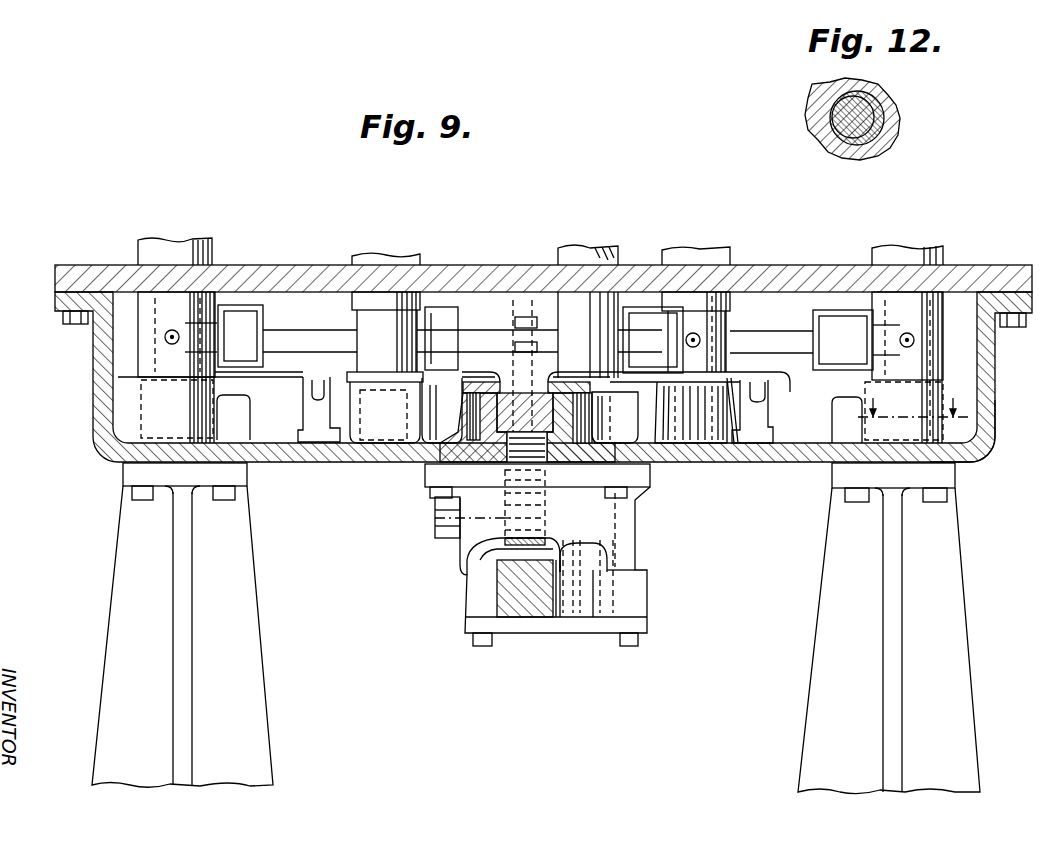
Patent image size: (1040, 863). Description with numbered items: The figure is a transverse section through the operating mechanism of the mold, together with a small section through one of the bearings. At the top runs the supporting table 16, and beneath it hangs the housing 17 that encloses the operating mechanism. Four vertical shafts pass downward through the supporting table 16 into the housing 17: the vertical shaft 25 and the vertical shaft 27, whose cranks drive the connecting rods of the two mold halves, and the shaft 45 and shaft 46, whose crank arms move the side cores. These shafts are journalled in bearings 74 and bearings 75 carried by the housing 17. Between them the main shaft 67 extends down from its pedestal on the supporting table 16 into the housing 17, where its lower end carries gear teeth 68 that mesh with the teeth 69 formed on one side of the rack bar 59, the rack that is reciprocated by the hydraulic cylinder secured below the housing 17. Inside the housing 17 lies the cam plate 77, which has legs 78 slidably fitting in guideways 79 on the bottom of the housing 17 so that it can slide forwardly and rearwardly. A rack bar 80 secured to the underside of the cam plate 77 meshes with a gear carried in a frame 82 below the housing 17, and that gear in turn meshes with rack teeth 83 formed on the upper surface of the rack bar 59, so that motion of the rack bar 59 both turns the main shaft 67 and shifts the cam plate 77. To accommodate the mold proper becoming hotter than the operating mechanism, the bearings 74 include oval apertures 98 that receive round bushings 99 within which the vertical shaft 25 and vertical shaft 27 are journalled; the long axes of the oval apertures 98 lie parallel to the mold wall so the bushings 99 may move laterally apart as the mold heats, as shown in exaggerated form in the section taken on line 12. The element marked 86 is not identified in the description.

In FIG. 9, the supporting table 16 is at (100, 265).
In FIG. 9, the housing 17 is at (98, 380).
In FIG. 9, the bearings 74 is at (985, 443).
In FIG. 9, the vertical shaft 25 is at (158, 246).
In FIG. 9, the shaft 45 is at (386, 258).
In FIG. 9, the shaft 46 is at (710, 250).
In FIG. 9, the vertical shaft 27 is at (925, 250).
In FIG. 12, the vertical shaft 27 is at (833, 113).
In FIG. 9, the main shaft 67 is at (570, 250).
In FIG. 9, the cam plate 77 is at (312, 362).
In FIG. 9, the legs 78 is at (304, 408).
In FIG. 9, the guideways 79 is at (304, 440).
In FIG. 9, the rack bar 80 is at (510, 415).
In FIG. 9, the bearings 75 is at (731, 445).
In FIG. 9, the section line 12— 12 is at (913, 411).
In FIG. 9, the frame 82 is at (622, 506).
In FIG. 9, the boss 86 is at (436, 522).
In FIG. 9, the gear teeth 68 is at (613, 551).
In FIG. 9, the rack teeth 83 is at (483, 557).
In FIG. 9, the rack bar 59 is at (515, 594).
In FIG. 9, the teeth 69 is at (558, 608).
In FIG. 9, the round bushings 99 is at (140, 461).
In FIG. 12, the round bushings 99 is at (873, 99).
In FIG. 12, the oval apertures 98 is at (880, 114).